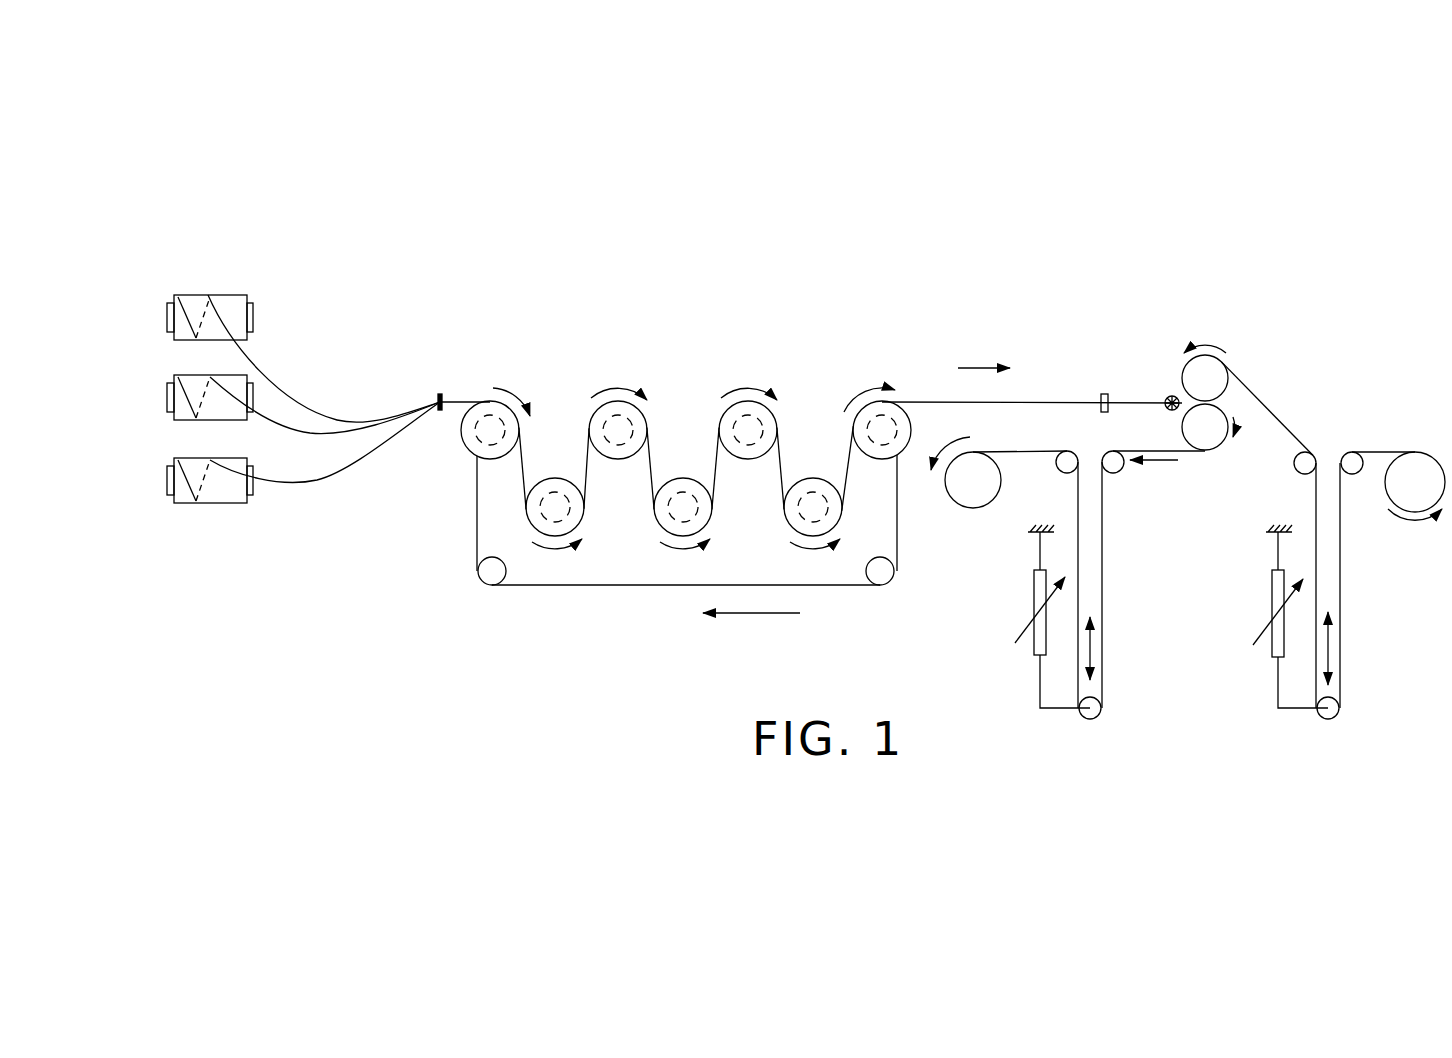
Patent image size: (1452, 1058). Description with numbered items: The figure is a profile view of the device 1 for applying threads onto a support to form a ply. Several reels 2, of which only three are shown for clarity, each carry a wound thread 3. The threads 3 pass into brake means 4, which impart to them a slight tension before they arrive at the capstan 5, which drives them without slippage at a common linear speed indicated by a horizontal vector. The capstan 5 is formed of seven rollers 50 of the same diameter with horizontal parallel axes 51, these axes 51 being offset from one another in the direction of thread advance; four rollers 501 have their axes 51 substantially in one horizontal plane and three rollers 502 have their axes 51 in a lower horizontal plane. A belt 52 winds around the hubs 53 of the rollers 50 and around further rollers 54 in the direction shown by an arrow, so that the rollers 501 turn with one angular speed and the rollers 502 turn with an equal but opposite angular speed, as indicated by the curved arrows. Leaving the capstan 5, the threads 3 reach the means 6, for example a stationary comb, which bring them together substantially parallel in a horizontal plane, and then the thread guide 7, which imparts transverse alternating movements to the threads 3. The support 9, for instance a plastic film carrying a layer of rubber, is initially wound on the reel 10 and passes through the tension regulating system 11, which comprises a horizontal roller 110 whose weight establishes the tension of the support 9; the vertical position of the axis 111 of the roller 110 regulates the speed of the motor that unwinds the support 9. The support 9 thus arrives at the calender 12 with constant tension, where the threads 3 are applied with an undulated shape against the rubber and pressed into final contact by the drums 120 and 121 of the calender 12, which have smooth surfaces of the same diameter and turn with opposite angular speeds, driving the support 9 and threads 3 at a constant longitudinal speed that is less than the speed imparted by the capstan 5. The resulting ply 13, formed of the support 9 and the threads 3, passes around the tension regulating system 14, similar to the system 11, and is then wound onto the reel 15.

The device 1 is at (953, 340).
The reels 2 is at (232, 295).
The thread 3 is at (287, 402).
The brake means 4 is at (440, 394).
The capstan 5 is at (703, 356).
The means for bringing the threads together 6 is at (1105, 393).
The thread guide 7 is at (1167, 410).
The support 9 is at (1273, 407).
The reel 10 is at (1426, 453).
The tension regulating system 11 is at (1340, 712).
The calender 12 is at (1207, 405).
The ply 13 is at (1043, 452).
The tension regulating system 14 is at (1098, 715).
The reel 15 is at (973, 508).
The rollers 50 is at (470, 448).
The axes 51 is at (496, 462).
The belt 52 is at (645, 588).
The hubs 53 is at (908, 420).
The rollers 54 is at (485, 586).
The horizontal roller 110 is at (1326, 718).
The axis 111 is at (1332, 718).
The drum 120 is at (1184, 372).
The drum 121 is at (1185, 543).
The rollers 501 is at (898, 527).
The rollers 502 is at (788, 522).